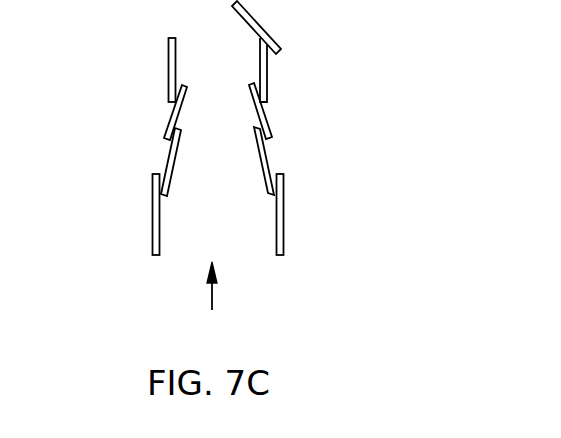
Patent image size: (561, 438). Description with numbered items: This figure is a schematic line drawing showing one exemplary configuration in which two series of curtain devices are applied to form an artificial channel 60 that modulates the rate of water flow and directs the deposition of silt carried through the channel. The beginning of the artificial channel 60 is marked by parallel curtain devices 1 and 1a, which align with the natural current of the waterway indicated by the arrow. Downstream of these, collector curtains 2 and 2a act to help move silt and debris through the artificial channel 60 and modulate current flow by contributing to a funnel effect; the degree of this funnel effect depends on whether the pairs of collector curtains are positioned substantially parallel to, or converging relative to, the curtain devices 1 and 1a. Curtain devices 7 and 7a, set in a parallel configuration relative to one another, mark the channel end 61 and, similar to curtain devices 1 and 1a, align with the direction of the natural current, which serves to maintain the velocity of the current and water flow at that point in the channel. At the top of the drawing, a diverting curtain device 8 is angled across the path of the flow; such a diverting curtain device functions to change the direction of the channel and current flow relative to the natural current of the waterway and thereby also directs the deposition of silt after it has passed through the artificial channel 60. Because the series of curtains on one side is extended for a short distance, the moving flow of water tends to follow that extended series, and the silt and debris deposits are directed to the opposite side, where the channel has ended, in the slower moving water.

The curtain device 1 is at (284, 231).
The curtain device 1a is at (152, 223).
The collector curtain 2 is at (265, 113).
The collector curtain 2a is at (173, 109).
The curtain device 7 is at (267, 72).
The curtain device 7a is at (168, 53).
The diverting curtain device 8 is at (257, 21).
The artificial channel 60 is at (213, 265).
The channel end 61 is at (213, 43).